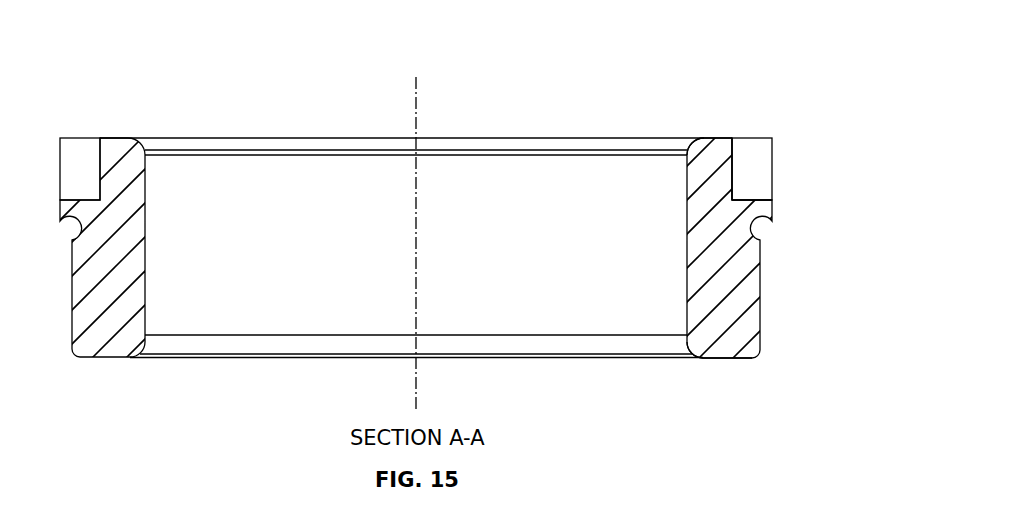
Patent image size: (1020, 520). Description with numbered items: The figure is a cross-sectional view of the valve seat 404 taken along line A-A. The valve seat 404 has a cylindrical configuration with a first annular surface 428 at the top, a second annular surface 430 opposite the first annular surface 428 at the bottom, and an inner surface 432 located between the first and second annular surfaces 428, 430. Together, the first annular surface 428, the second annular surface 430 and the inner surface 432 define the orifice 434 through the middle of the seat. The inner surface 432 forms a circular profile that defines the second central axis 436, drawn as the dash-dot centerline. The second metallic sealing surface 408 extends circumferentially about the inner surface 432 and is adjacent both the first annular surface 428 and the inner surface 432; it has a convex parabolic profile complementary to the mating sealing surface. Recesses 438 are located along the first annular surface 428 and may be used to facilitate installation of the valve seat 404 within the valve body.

The valve seat 404 is at (735, 67).
The second metallic sealing surface 408 is at (698, 140).
The first annular surface 428 is at (728, 137).
The second annular surface 430 is at (717, 362).
The inner surface 432 is at (685, 320).
The orifice 434 is at (228, 193).
The second central axis 436 is at (416, 100).
The recesses 438 is at (755, 168).